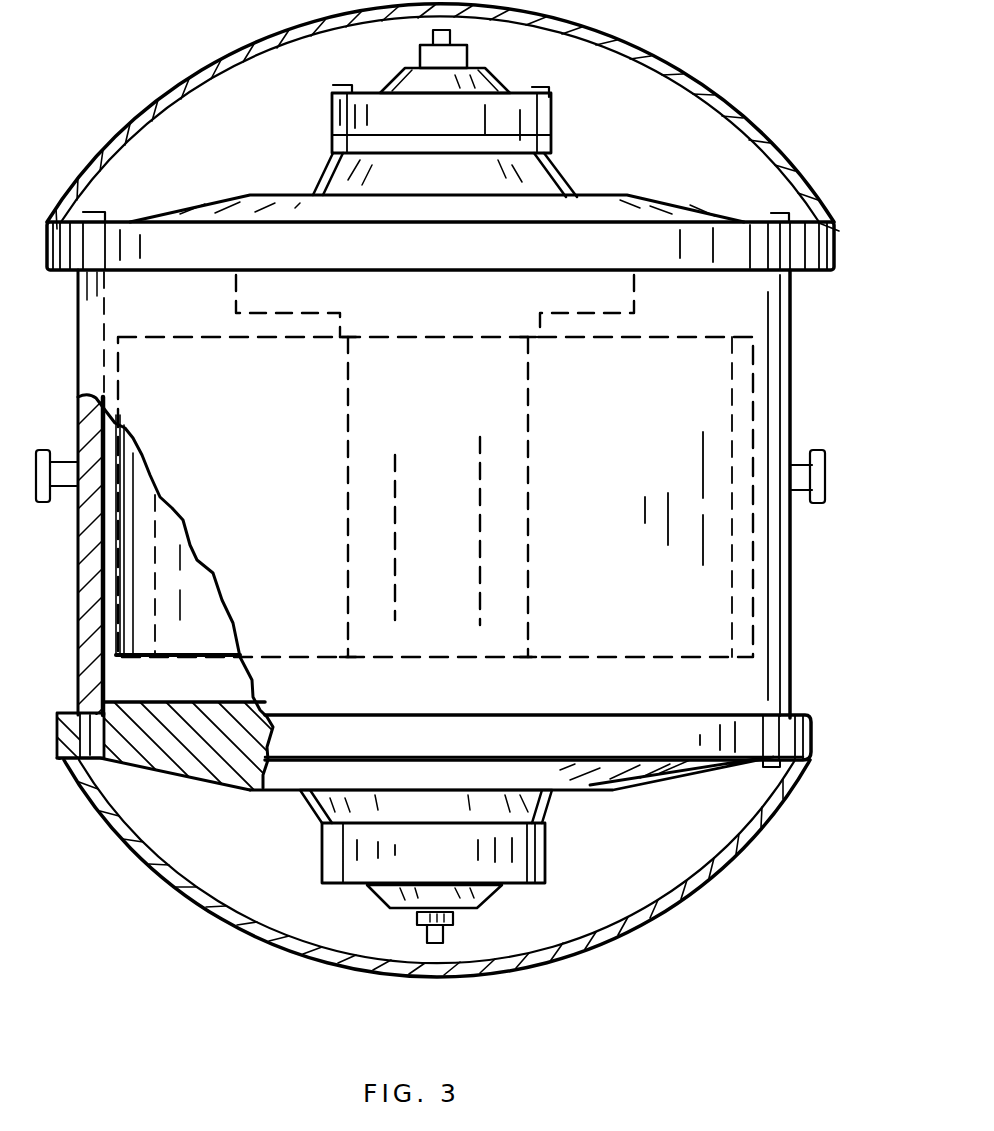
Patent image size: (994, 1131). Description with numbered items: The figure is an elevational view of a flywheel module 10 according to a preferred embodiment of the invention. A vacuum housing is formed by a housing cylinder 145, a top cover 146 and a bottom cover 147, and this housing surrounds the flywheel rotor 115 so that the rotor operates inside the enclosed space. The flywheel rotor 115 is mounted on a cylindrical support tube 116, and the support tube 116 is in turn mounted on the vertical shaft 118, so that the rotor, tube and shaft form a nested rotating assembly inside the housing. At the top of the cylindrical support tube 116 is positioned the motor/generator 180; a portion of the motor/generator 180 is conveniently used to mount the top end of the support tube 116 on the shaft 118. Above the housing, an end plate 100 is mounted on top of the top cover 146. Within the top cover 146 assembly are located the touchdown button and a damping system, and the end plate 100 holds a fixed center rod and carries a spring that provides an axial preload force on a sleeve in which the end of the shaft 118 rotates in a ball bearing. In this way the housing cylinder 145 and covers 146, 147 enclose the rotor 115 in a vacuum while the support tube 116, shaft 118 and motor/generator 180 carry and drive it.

The flywheel module 10 is at (724, 66).
The end plate 100 is at (552, 118).
The top cover 146 is at (834, 241).
The housing cylinder 145 is at (783, 548).
The bottom cover 147 is at (651, 783).
The motor/generator 180 is at (338, 333).
The cylindrical support tube 116 is at (347, 592).
The vertical shaft 118 is at (480, 550).
The flywheel rotor 115 is at (203, 655).